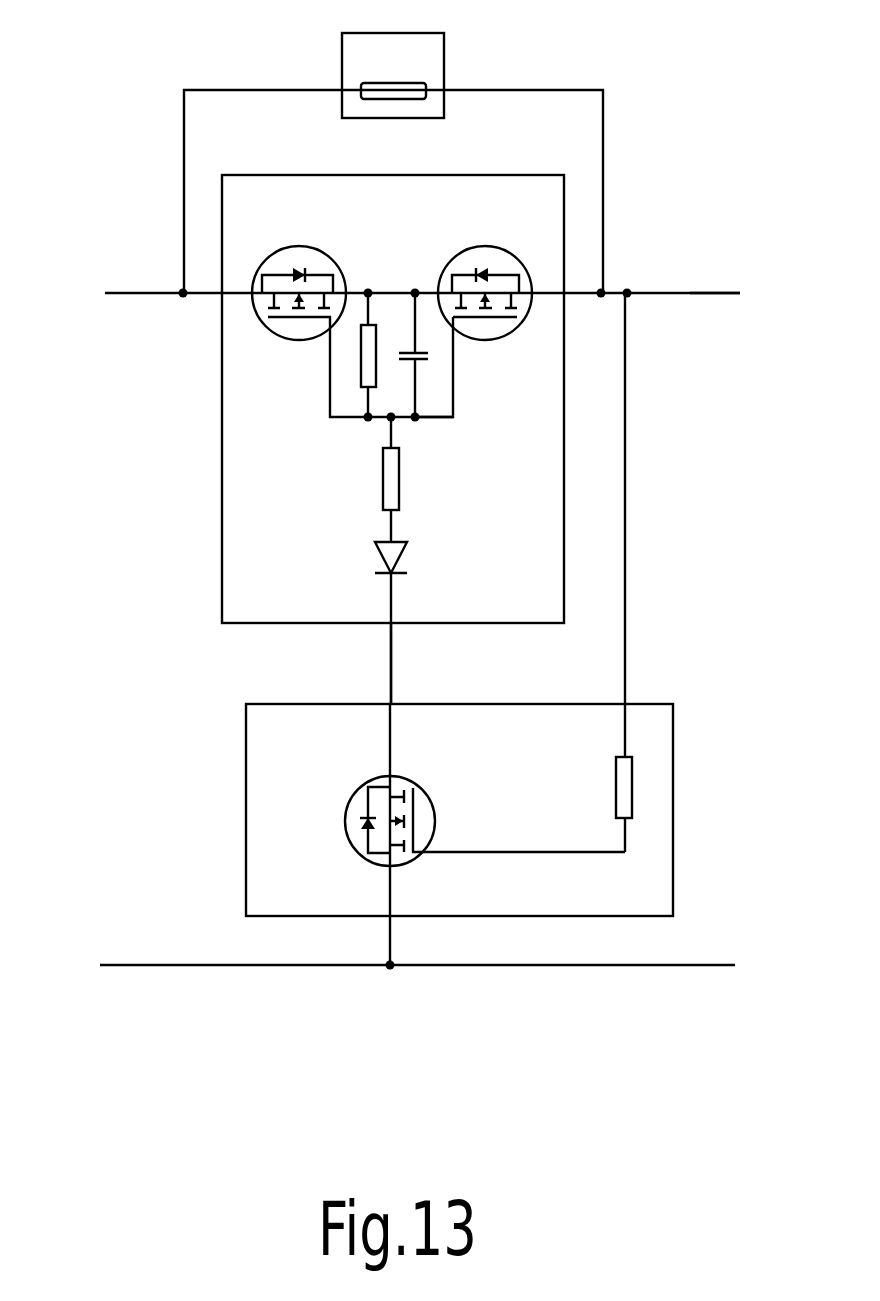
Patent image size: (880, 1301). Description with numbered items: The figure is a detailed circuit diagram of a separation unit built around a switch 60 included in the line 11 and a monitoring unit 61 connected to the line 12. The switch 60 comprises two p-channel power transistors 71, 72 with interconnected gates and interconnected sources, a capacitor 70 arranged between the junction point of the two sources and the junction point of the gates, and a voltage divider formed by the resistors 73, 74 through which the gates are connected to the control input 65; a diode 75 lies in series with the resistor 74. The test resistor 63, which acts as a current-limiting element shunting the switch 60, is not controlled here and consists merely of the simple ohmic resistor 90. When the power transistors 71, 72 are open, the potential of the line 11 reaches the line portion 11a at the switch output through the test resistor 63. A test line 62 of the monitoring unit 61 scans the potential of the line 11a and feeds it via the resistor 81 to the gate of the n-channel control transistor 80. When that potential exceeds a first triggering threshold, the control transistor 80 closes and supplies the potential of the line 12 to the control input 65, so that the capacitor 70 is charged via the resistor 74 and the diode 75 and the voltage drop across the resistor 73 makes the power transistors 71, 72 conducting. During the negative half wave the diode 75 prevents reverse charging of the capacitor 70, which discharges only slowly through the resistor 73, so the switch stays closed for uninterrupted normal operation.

The line 11 is at (142, 290).
The line portion 11a is at (693, 293).
The line 12 is at (182, 963).
The switch 60 is at (219, 393).
The monitoring unit 61 is at (242, 818).
The test line 62 is at (626, 472).
The test resistor 63 is at (444, 72).
The control input 65 is at (388, 628).
The capacitor 70 is at (432, 362).
The p-channel power transistor 71 is at (277, 341).
The p-channel power transistor 72 is at (510, 335).
The resistor 73 is at (367, 357).
The resistor 74 is at (393, 467).
The diode 75 is at (398, 555).
The n-channel control transistor 80 is at (345, 833).
The resistor 81 is at (620, 780).
The ohmic resistor 90 is at (373, 90).